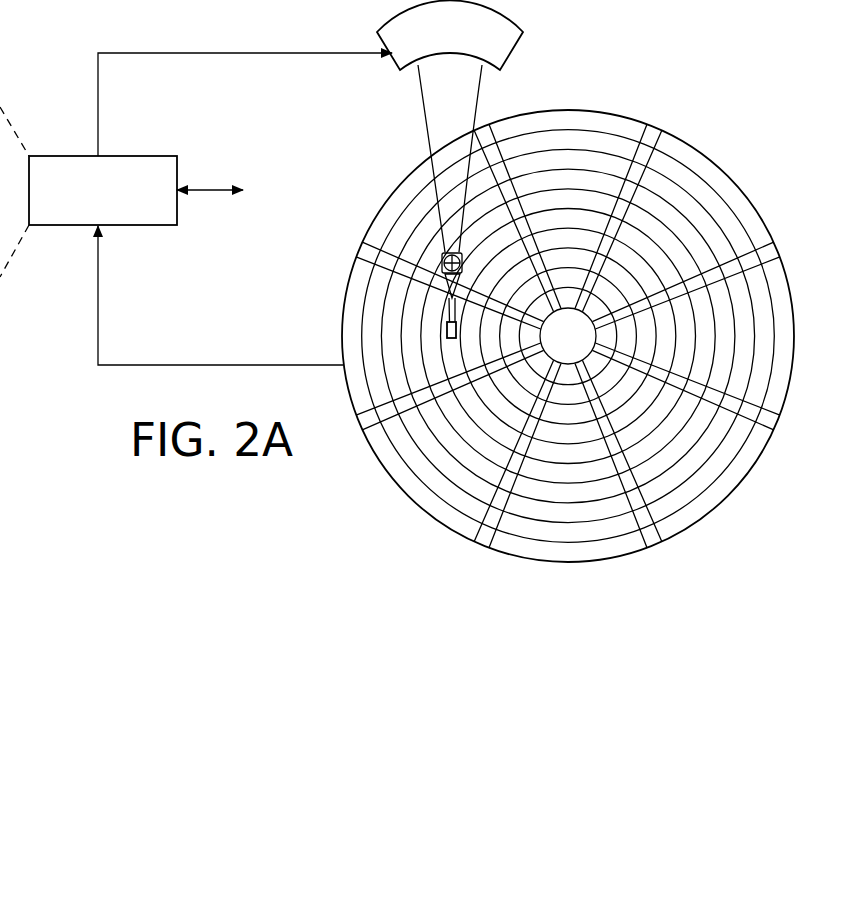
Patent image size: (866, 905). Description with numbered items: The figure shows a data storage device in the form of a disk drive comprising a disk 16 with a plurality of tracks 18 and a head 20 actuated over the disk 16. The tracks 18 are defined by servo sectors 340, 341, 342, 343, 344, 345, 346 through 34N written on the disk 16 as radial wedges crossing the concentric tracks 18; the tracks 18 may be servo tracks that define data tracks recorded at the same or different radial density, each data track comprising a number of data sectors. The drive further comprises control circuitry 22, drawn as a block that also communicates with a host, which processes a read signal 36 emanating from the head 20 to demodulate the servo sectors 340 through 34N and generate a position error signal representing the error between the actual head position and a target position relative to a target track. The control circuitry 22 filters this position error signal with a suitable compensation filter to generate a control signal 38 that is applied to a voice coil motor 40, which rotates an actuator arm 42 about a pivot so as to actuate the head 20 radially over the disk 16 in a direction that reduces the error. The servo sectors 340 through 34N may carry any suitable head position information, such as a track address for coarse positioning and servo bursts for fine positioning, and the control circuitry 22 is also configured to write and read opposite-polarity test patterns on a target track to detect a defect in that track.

The disk 16 is at (723, 162).
The tracks 18 is at (552, 140).
The head 20 is at (442, 329).
The control circuitry 22 is at (143, 156).
The servo sector 34N is at (494, 130).
The servo sector 340 is at (656, 136).
The servo sector 341 is at (768, 253).
The servo sector 342 is at (768, 423).
The servo sector 343 is at (648, 538).
The servo sector 344 is at (482, 535).
The servo sector 345 is at (365, 428).
The servo sector 346 is at (370, 245).
The read signal 36 is at (258, 365).
The control signal 38 is at (98, 90).
The voice coil motor 40 is at (397, 67).
The actuator arm 42 is at (433, 117).